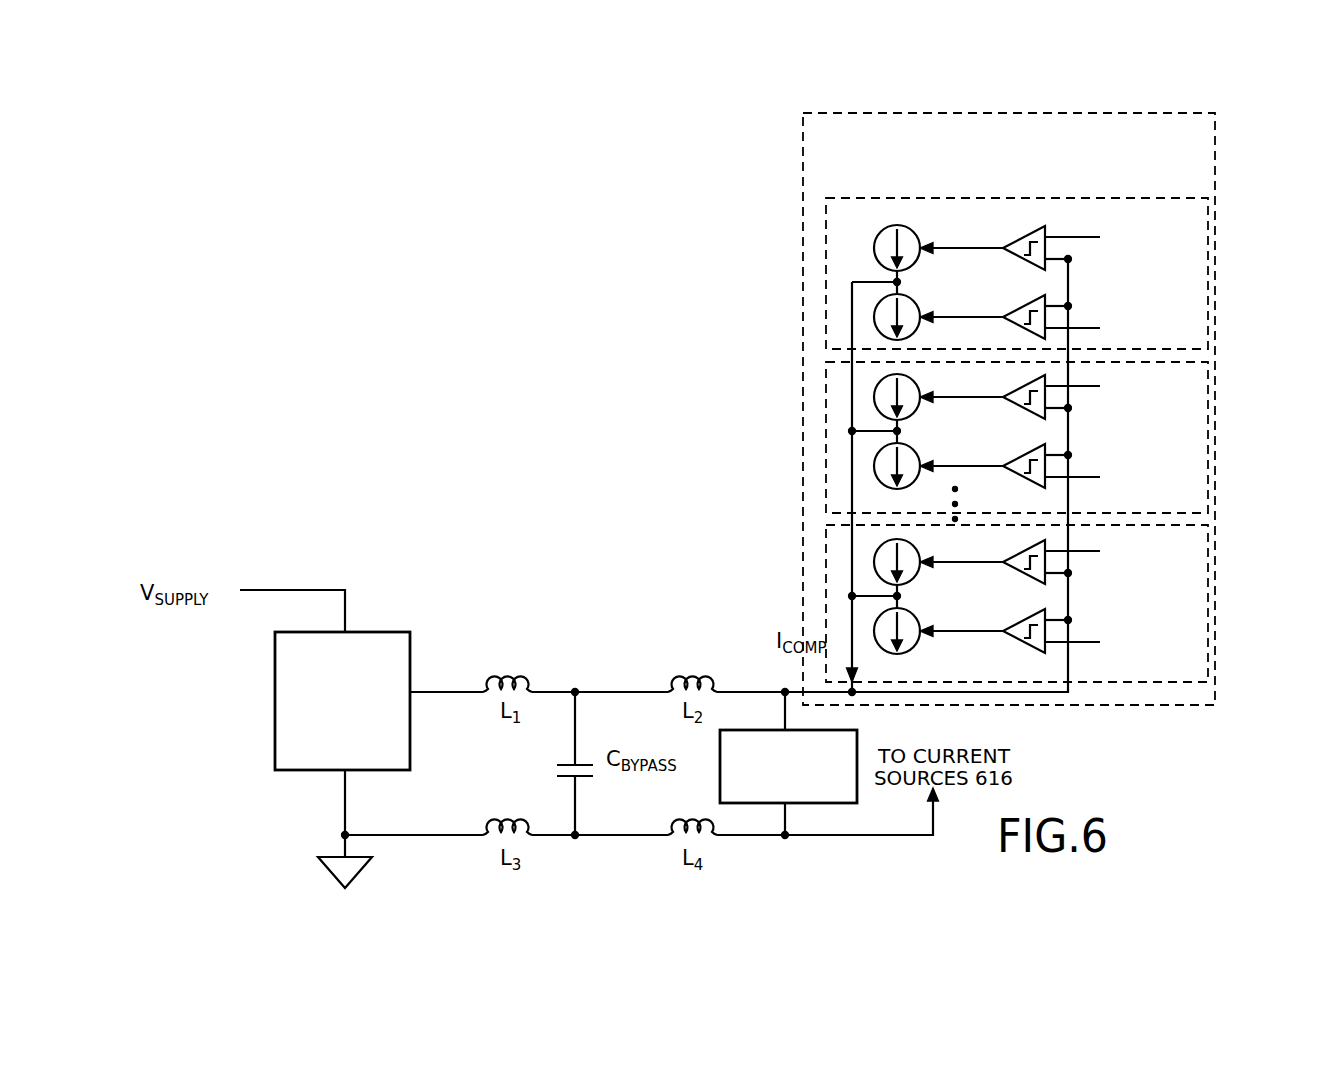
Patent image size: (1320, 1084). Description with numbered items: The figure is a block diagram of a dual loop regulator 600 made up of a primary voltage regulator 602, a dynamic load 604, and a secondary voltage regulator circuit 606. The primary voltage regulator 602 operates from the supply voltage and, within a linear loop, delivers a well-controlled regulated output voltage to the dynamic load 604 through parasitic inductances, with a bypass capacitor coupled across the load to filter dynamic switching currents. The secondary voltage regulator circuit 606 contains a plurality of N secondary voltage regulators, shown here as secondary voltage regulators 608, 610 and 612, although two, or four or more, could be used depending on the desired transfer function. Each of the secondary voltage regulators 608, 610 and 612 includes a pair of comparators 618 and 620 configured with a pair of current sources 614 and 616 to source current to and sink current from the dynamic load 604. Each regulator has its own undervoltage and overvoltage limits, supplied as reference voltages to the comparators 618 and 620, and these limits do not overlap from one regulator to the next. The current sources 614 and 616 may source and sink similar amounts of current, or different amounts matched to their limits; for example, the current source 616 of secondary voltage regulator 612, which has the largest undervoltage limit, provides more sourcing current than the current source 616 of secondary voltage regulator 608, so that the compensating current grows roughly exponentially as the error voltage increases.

The dual loop regulator 600 is at (481, 296).
The primary voltage regulator 602 is at (410, 650).
The dynamic load 604 is at (838, 803).
The secondary voltage regulator circuit 606 is at (1215, 143).
The secondary voltage regulator 608 is at (1208, 250).
The secondary voltage regulator 610 is at (1208, 418).
The secondary voltage regulator 612 is at (1208, 585).
The current source 614 is at (920, 256).
The current source 616 is at (918, 307).
The comparator 618 is at (1012, 256).
The comparator 620 is at (1006, 320).